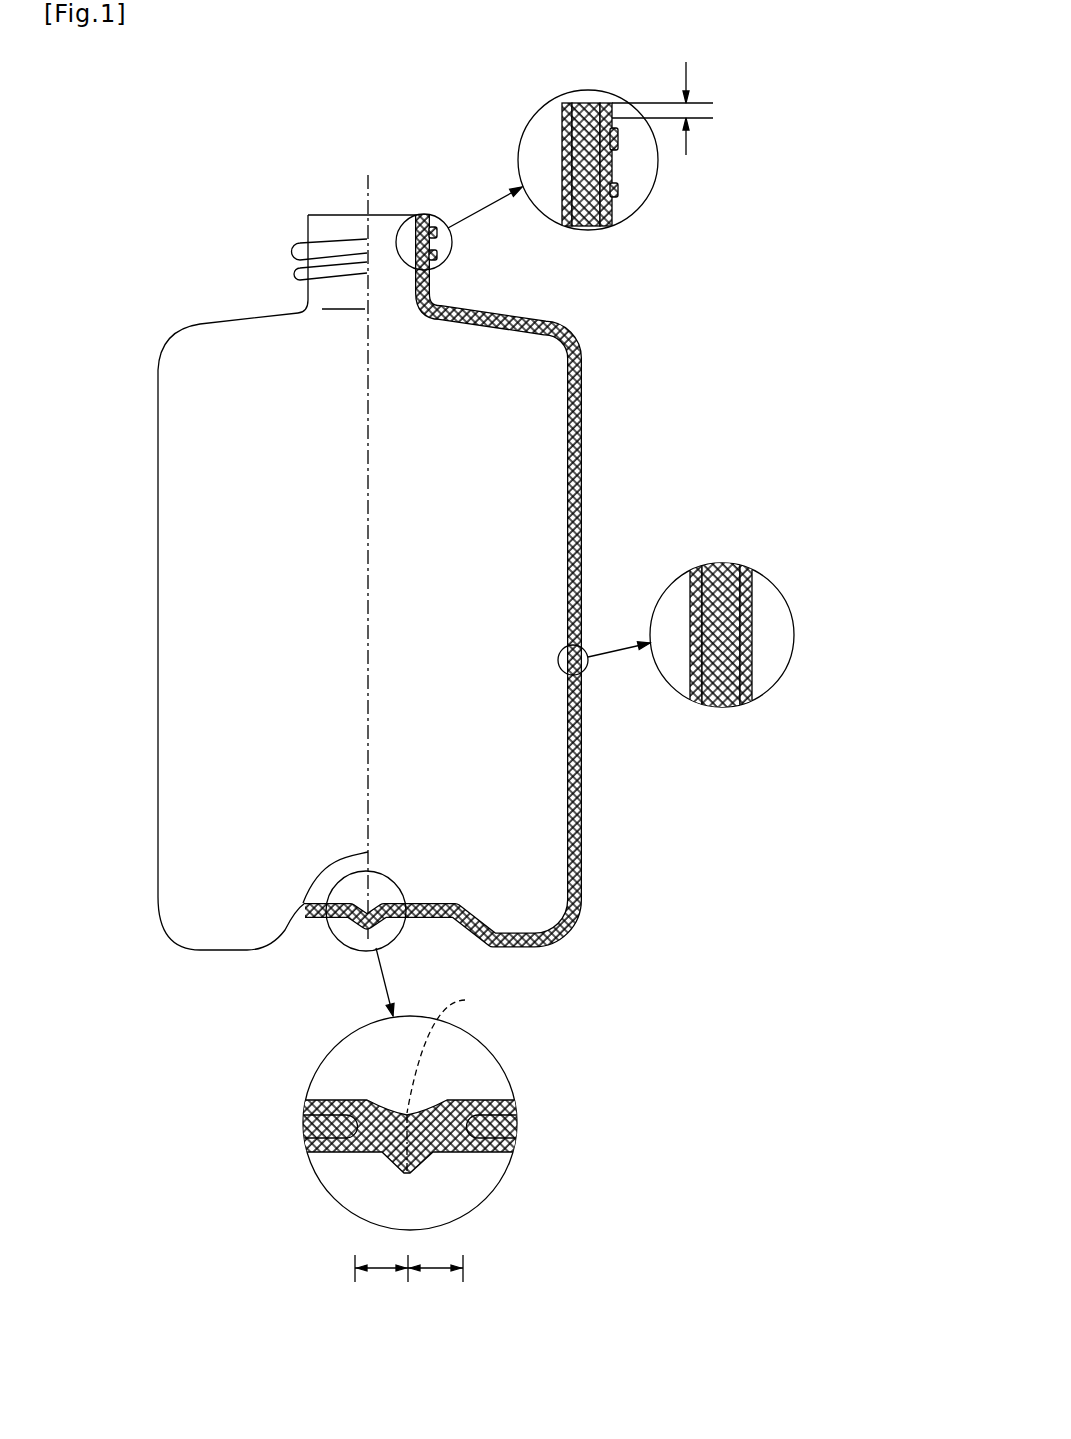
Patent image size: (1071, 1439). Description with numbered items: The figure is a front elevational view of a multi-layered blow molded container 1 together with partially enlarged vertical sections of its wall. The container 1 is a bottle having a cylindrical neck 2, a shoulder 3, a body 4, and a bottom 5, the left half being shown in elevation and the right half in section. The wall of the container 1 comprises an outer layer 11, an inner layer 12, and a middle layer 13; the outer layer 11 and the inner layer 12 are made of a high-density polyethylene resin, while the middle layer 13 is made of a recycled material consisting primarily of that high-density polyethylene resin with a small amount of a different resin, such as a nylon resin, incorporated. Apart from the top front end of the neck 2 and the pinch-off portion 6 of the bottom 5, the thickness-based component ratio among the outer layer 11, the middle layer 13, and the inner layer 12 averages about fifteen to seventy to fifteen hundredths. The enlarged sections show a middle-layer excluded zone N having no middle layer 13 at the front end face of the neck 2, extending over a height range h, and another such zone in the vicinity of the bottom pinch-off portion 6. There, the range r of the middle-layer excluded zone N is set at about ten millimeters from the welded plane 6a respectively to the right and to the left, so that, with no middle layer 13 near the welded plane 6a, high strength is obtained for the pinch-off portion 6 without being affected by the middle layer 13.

The container 1 is at (146, 428).
The neck 2 is at (300, 262).
The shoulder 3 is at (200, 323).
The body 4 is at (158, 547).
The bottom 5 is at (183, 925).
The pinch-off portion 6 is at (350, 935).
The welded plane 6a is at (453, 1049).
The outer layer 11 is at (608, 165).
The inner layer 12 is at (565, 173).
The middle layer 13 is at (605, 200).
The middle-layer excluded zone N is at (565, 112).
The height range h is at (700, 112).
The range r is at (409, 1282).